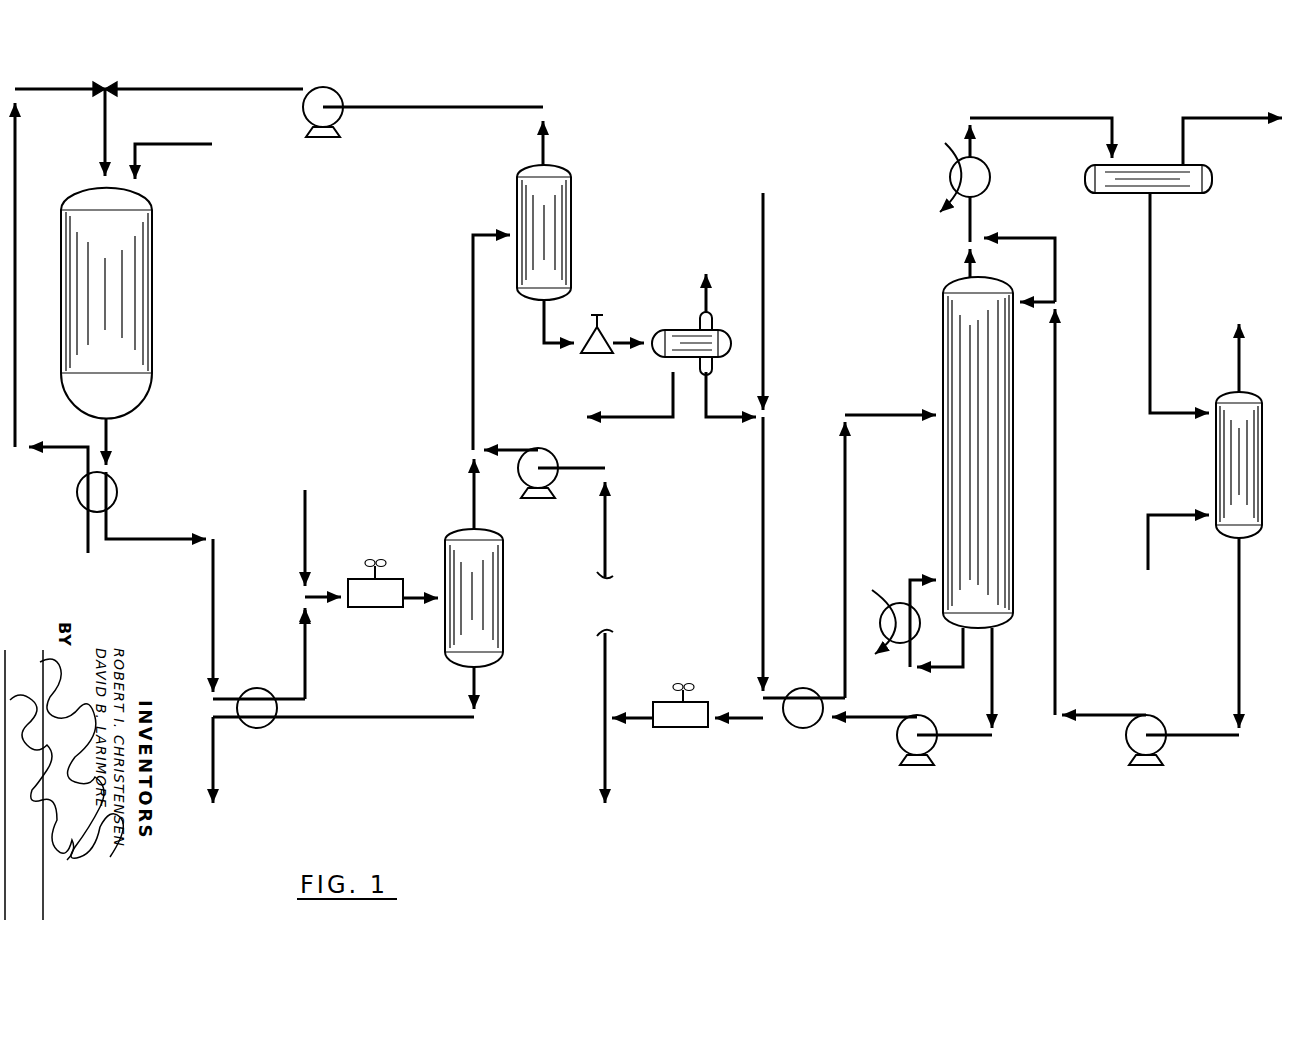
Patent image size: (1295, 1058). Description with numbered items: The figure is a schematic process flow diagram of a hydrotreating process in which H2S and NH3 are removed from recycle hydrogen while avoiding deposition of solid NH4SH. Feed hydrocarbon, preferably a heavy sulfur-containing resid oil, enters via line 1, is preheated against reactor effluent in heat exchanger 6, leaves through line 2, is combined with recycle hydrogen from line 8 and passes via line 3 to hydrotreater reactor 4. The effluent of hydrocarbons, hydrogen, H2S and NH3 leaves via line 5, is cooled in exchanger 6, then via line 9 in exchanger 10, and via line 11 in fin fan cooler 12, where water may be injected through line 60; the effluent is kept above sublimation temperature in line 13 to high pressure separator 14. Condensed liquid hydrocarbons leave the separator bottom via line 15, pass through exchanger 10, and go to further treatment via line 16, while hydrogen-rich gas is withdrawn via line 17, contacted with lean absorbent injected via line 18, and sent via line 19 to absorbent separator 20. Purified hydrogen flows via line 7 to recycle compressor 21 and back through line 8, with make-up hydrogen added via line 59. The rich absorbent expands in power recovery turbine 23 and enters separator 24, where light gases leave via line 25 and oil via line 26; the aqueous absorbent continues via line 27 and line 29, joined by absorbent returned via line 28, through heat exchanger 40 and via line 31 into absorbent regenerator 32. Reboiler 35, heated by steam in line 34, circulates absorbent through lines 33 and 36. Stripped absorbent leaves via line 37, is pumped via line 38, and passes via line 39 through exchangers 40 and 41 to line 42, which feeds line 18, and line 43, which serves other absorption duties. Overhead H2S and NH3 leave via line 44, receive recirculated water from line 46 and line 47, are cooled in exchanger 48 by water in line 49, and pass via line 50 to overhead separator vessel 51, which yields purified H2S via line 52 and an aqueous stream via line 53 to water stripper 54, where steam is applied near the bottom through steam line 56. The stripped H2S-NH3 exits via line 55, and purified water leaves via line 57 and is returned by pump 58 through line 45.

The line 1 is at (85, 541).
The line 2 is at (65, 91).
The line 3 is at (100, 145).
The hydrotreater reactor 4 is at (152, 250).
The line 5 is at (108, 443).
The heat exchanger 6 is at (117, 488).
The line 7 is at (548, 138).
The line 8 is at (238, 91).
The line 9 is at (215, 590).
The exchanger 10 is at (258, 688).
The line 11 is at (308, 650).
The fin fan cooler 12 is at (368, 609).
The line 13 is at (421, 590).
The high pressure separator 14 is at (505, 565).
The line 15 is at (380, 720).
The line 16 is at (216, 766).
The line 17 is at (470, 491).
The line 18 is at (508, 446).
The line 19 is at (470, 343).
The absorbent separator 20 is at (575, 216).
The recycle compressor 21 is at (340, 96).
The power recovery turbine 23 is at (588, 357).
The separator 24 is at (675, 330).
The line 25 is at (700, 292).
The line 26 is at (633, 419).
The line 27 is at (730, 420).
The line 28 is at (765, 265).
The line 29 is at (760, 575).
The line 31 is at (848, 491).
The absorbent regenerator 32 is at (940, 321).
The line 33 is at (965, 647).
The line 34 is at (887, 587).
The reboiler 35 is at (878, 622).
The line 36 is at (925, 577).
The line 37 is at (961, 738).
The line 38 is at (925, 719).
The line 39 is at (872, 722).
The heat exchanger 40 is at (802, 729).
The exchanger 41 is at (685, 729).
The line 42 is at (608, 531).
The line 43 is at (600, 755).
The line 44 is at (967, 268).
The line 45 is at (1058, 400).
The line 46 is at (1037, 300).
The line 47 is at (1012, 236).
The exchanger 48 is at (990, 173).
The line 49 is at (945, 150).
The line 50 is at (1065, 115).
The overhead separator vessel 51 is at (1185, 195).
The line 52 is at (1240, 120).
The line 53 is at (1147, 345).
The water stripper 54 is at (1218, 530).
The line 55 is at (1237, 360).
The steam line 56 is at (1145, 534).
The line 57 is at (1237, 652).
The pump 58 is at (1153, 718).
The line 59 is at (182, 150).
The line 60 is at (303, 526).